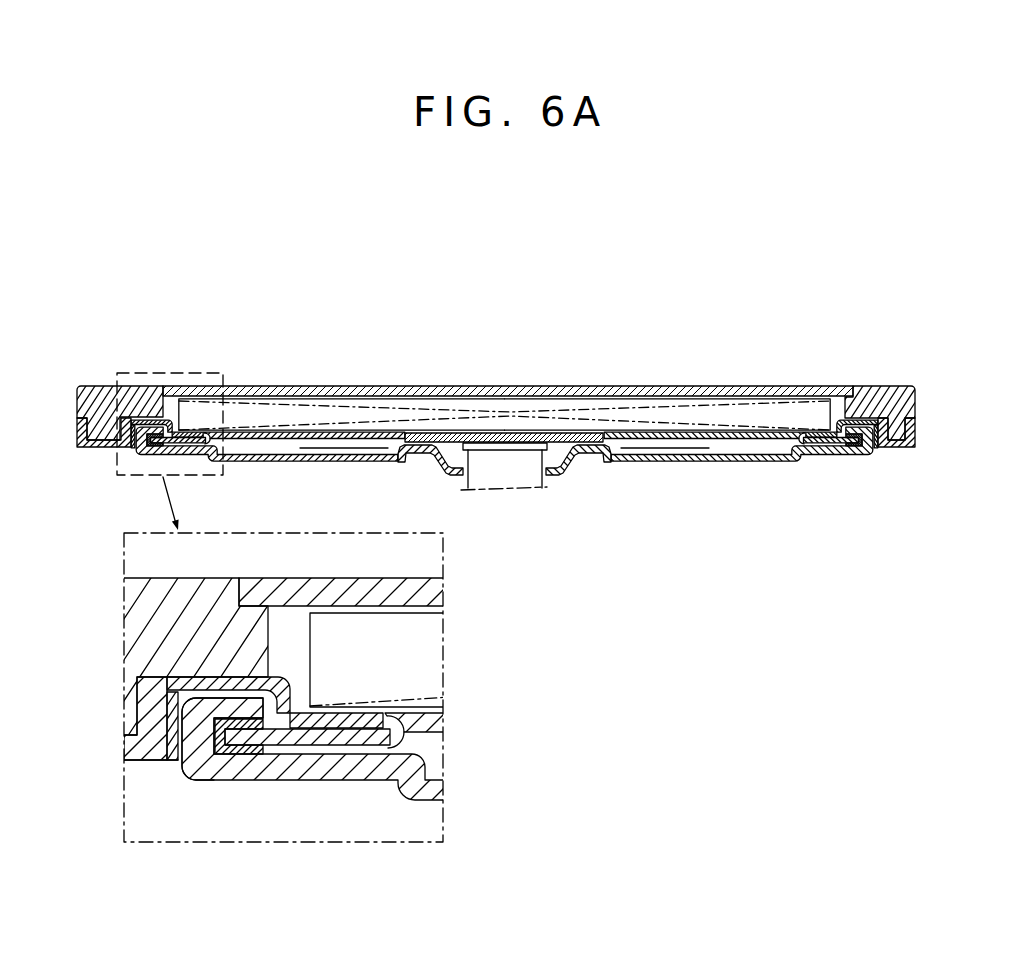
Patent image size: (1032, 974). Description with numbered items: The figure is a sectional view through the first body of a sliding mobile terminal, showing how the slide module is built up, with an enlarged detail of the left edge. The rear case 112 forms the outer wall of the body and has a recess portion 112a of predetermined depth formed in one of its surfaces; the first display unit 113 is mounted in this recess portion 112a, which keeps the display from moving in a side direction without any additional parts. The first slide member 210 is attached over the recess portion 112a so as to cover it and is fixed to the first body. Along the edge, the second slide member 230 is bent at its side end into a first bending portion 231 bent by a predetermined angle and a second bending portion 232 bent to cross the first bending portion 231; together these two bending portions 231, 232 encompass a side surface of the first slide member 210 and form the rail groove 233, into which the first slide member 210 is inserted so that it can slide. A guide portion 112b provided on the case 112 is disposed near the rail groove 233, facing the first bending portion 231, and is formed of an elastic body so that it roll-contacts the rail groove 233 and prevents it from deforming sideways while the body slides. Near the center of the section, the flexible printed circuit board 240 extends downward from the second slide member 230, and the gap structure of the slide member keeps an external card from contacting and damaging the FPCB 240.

The rear case 112 is at (134, 710).
The recess portion 112a is at (365, 723).
The guide portion 112b is at (185, 768).
The first display unit 113 is at (465, 405).
The first slide member 210 is at (339, 738).
The second slide member 230 is at (293, 768).
The first bending portion 231 is at (198, 758).
The second bending portion 232 is at (239, 710).
The rail groove 233 is at (232, 827).
The flexible printed circuit board 240 is at (513, 473).